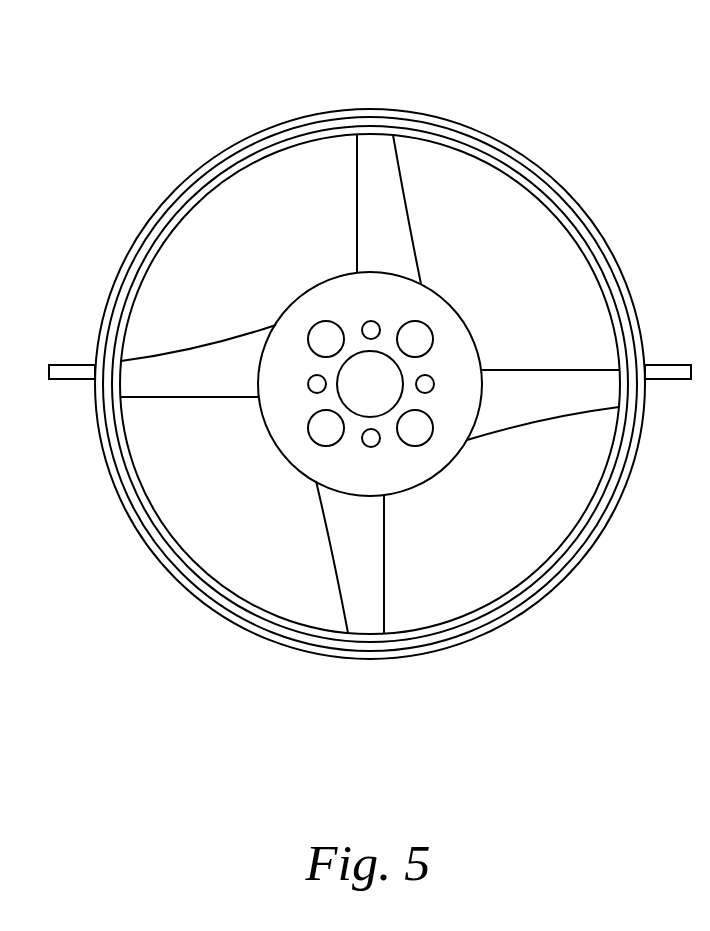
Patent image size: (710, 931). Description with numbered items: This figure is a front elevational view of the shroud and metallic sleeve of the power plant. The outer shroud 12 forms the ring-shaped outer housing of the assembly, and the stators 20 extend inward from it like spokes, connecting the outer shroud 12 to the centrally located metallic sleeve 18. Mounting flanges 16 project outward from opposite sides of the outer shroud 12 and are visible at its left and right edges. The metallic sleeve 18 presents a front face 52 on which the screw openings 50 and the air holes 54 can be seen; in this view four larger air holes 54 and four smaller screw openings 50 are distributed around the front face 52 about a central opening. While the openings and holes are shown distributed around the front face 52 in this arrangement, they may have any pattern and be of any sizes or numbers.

The outer shroud 12 is at (573, 197).
The mounting flange 16 is at (72, 380).
The metallic sleeve 18 is at (473, 337).
The stator 20 is at (397, 162).
The screw opening 50 is at (433, 388).
The front face 52 is at (327, 288).
The air hole 54 is at (307, 333).